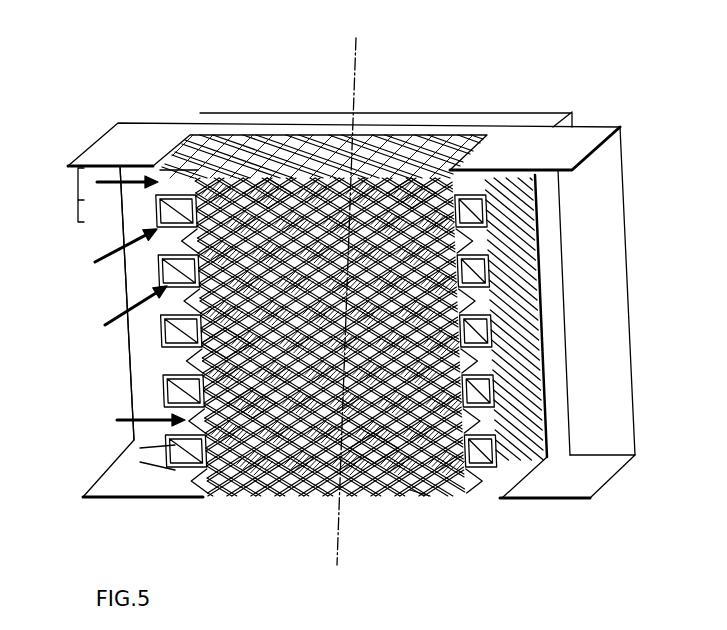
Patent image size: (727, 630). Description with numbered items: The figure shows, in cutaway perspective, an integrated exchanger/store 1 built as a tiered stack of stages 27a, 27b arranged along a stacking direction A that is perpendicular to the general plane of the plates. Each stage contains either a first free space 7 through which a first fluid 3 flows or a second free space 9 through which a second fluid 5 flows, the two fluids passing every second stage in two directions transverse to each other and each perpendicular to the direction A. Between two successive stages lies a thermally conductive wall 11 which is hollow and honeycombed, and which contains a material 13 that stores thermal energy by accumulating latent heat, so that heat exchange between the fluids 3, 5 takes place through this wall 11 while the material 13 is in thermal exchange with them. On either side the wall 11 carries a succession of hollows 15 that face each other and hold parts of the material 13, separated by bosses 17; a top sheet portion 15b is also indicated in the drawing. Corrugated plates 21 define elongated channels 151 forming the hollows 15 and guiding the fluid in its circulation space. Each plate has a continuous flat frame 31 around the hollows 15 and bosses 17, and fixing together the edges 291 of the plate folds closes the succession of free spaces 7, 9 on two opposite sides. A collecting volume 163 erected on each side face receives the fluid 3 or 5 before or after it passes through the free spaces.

The integrated exchanger/store 1 is at (239, 75).
The first fluid 3 is at (115, 177).
The second fluid 5 is at (125, 247).
The first free space 7 is at (182, 170).
The second free space 9 is at (388, 213).
The thermally conductive wall 11 is at (351, 178).
The material for storing thermal energy 13 is at (272, 193).
The hollows 15 is at (167, 347).
The top sheet portion 15b is at (415, 195).
The bosses 17 is at (282, 195).
The corrugated plates 21 is at (395, 136).
The first stage 27a is at (78, 183).
The second stage 27b is at (78, 207).
The continuous flat frame 31 is at (497, 150).
The elongated channels 151 is at (183, 182).
The collecting volume 163 is at (115, 173).
The edges of the folds 291 is at (157, 227).
The stacking direction A is at (357, 63).